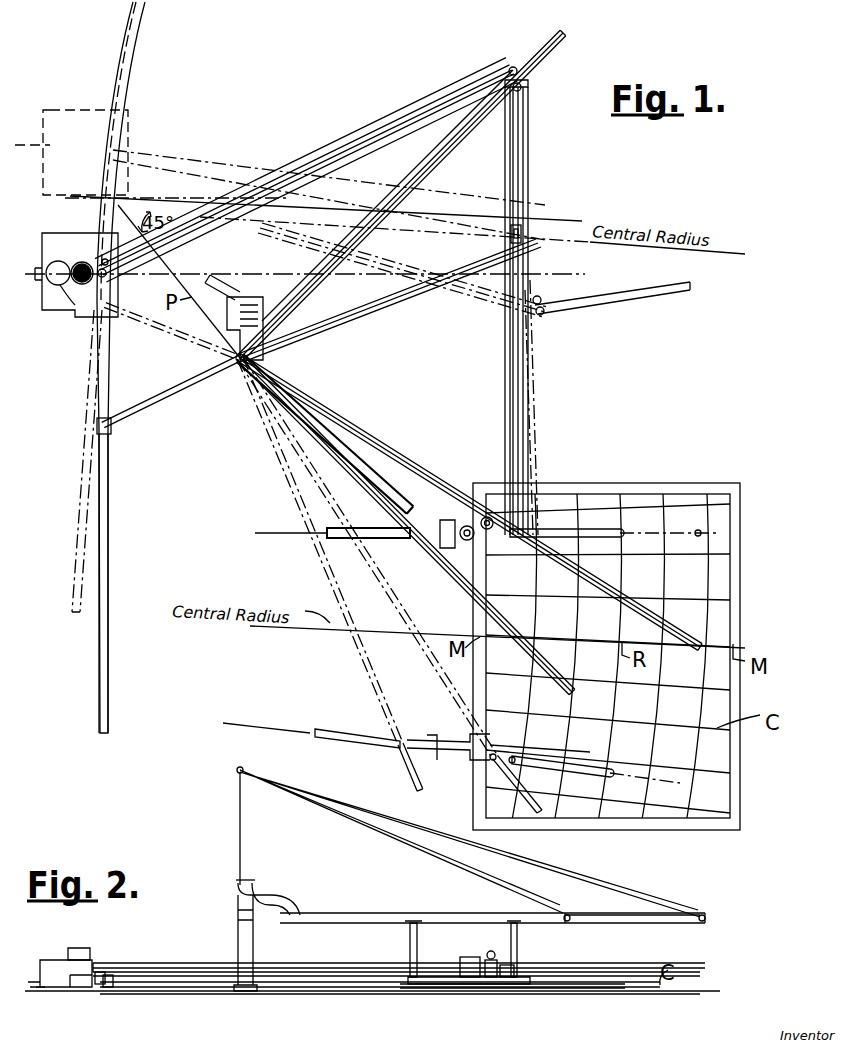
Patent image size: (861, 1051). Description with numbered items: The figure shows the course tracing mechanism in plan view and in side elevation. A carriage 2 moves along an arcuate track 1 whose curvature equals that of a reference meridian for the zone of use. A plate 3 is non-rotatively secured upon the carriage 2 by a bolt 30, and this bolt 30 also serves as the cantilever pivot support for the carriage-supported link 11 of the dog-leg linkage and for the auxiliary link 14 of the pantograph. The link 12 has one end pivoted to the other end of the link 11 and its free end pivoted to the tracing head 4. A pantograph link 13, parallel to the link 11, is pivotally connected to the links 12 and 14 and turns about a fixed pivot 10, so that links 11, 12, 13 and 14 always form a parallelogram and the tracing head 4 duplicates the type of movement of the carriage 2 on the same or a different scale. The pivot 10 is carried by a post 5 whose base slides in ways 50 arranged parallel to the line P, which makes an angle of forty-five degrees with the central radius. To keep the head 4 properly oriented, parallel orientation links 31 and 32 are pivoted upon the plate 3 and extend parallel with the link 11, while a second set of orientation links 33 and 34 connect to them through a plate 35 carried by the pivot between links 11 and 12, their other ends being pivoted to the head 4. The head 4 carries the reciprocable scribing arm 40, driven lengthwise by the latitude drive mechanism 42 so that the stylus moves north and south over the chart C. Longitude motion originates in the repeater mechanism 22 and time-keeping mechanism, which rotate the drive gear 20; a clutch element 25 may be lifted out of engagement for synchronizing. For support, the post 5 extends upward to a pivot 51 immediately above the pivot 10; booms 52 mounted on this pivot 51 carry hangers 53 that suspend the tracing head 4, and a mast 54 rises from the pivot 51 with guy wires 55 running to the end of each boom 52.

In FIG. 1, the track 1 is at (128, 24).
In FIG. 1, the carriage 2 is at (86, 315).
In FIG. 2, the carriage 2 is at (48, 990).
In FIG. 1, the plate 3 is at (102, 266).
In FIG. 1, the tracing head 4 is at (458, 524).
In FIG. 2, the tracing head 4 is at (430, 984).
In FIG. 1, the post 5 is at (262, 312).
In FIG. 2, the post 5 is at (237, 946).
In FIG. 1, the pivot point 10 is at (238, 364).
In FIG. 1, the link 11 is at (360, 140).
In FIG. 2, the link 11 is at (158, 975).
In FIG. 1, the link 12 is at (520, 172).
In FIG. 1, the pantograph link 13 is at (192, 382).
In FIG. 2, the pantograph link 13 is at (196, 985).
In FIG. 1, the auxiliary link 14 is at (105, 462).
In FIG. 2, the auxiliary link 14 is at (108, 988).
In FIG. 1, the drive gear 20 is at (52, 265).
In FIG. 2, the drive gear 20 is at (48, 960).
In FIG. 2, the repeater mechanism 22 is at (75, 987).
In FIG. 2, the clutch element 25 is at (75, 948).
In FIG. 1, the bolt 30 is at (112, 280).
In FIG. 1, the parallel orientation link 31 is at (350, 165).
In FIG. 2, the parallel orientation link 31 is at (138, 962).
In FIG. 1, the parallel orientation link 32 is at (302, 158).
In FIG. 1, the parallel orientation link 33 is at (506, 146).
In FIG. 1, the parallel orientation link 34 is at (528, 150).
In FIG. 1, the plate 35 is at (522, 85).
In FIG. 1, the scribing arm 40 is at (592, 530).
In FIG. 2, the scribing arm 40 is at (598, 985).
In FIG. 2, the latitude drive mechanism 42 is at (468, 978).
In FIG. 1, the ways 50 is at (300, 372).
In FIG. 2, the ways 50 is at (290, 995).
In FIG. 2, the pivot 51 is at (236, 886).
In FIG. 1, the booms 52 is at (545, 42).
In FIG. 2, the booms 52 is at (552, 924).
In FIG. 2, the hangers 53 is at (508, 938).
In FIG. 2, the mast 54 is at (238, 826).
In FIG. 2, the guy wires 55 is at (445, 862).